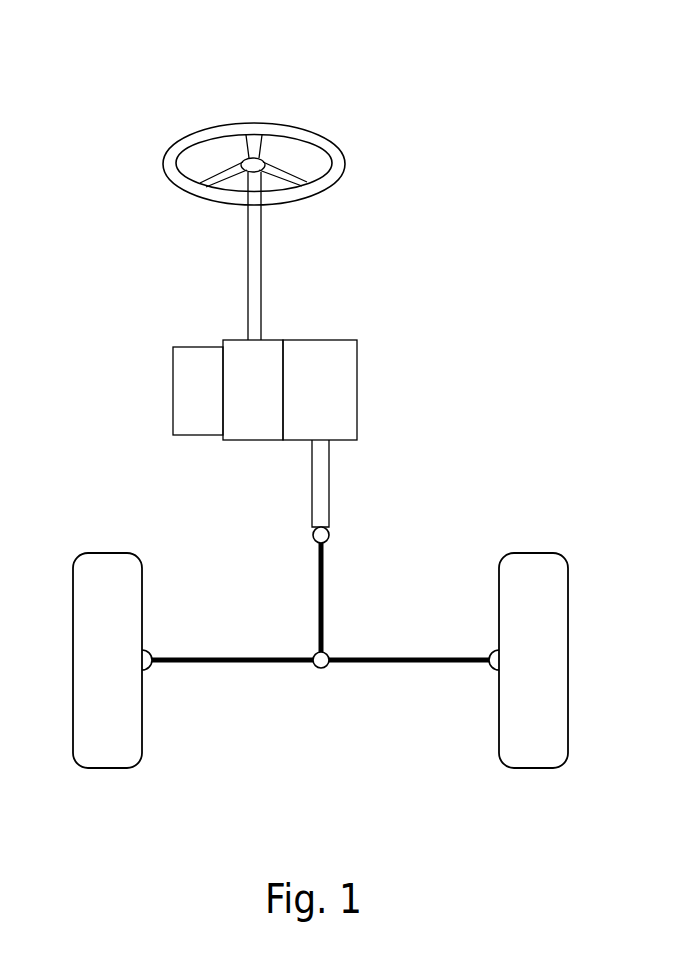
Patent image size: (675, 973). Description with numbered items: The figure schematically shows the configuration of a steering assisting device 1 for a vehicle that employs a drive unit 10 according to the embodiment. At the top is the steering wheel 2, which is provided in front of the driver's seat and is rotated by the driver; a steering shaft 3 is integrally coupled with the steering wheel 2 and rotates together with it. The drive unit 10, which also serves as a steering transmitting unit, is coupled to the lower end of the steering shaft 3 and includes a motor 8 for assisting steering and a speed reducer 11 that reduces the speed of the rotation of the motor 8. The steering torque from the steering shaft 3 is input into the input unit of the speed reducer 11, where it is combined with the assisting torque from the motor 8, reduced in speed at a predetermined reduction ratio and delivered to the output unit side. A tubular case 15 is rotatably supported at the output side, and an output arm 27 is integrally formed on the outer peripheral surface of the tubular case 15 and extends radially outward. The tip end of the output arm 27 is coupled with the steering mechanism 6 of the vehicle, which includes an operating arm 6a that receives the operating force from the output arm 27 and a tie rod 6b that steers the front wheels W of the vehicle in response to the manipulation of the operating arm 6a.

The steering assisting device 1 is at (486, 94).
The steering wheel 2 is at (183, 143).
The steering shaft 3 is at (262, 282).
The drive unit 10 is at (346, 334).
The motor 8 is at (192, 385).
The speed reducer 11 is at (252, 432).
The tubular case 15 is at (345, 390).
The output arm 27 is at (320, 483).
The steering mechanism 6 is at (321, 641).
The operating arm 6a is at (320, 623).
The tie rod 6b is at (397, 663).
The front wheels W is at (108, 748).